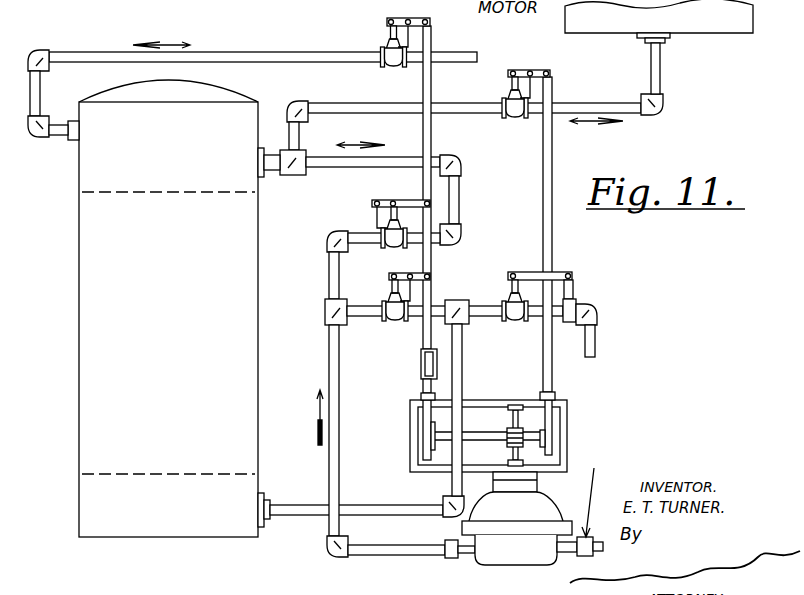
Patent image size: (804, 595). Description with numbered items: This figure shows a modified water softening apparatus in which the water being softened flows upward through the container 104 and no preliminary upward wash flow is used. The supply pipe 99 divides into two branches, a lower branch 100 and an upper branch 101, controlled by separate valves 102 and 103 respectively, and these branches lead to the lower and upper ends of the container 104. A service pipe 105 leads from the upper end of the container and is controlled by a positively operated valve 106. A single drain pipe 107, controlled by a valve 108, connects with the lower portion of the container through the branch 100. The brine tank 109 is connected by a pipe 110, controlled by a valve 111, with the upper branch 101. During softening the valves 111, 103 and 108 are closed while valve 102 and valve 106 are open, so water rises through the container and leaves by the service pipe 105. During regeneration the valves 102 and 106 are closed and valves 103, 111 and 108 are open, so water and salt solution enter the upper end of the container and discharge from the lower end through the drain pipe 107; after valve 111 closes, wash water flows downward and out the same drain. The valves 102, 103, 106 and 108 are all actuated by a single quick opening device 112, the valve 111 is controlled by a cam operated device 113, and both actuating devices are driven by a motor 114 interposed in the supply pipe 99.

The supply pipe 99 is at (400, 533).
The branch of the supply pipe 100 is at (388, 497).
The branch of the supply pipe 101 is at (345, 223).
The valve 102 is at (397, 316).
The valve 103 is at (395, 240).
The container 104 is at (243, 360).
The service pipe 105 is at (303, 61).
The valve 106 is at (395, 57).
The drain pipe 107 is at (591, 347).
The valve 108 is at (515, 315).
The brine tank 109 is at (728, 20).
The pipe 110 is at (488, 98).
The valve 111 is at (518, 106).
The quick opening device 112 is at (420, 364).
The cam operated device 113 is at (552, 420).
The motor 114 is at (544, 520).